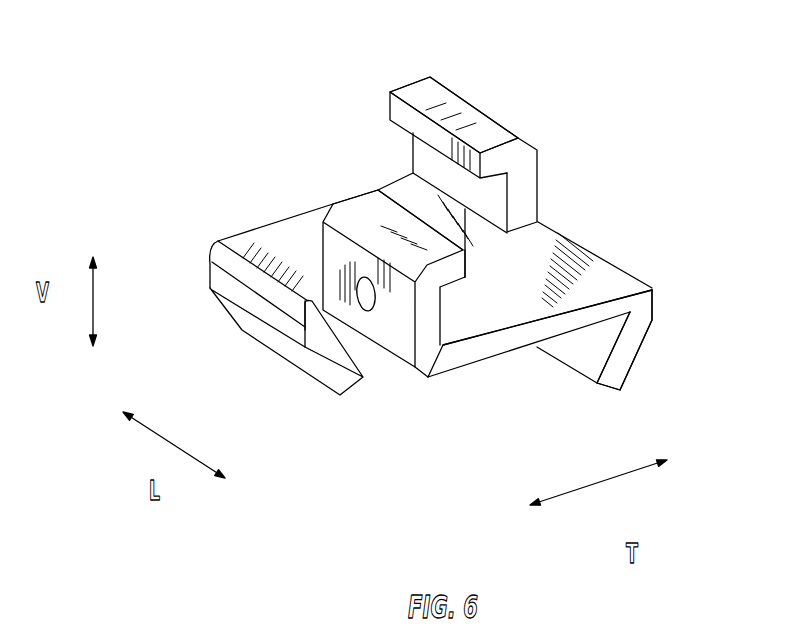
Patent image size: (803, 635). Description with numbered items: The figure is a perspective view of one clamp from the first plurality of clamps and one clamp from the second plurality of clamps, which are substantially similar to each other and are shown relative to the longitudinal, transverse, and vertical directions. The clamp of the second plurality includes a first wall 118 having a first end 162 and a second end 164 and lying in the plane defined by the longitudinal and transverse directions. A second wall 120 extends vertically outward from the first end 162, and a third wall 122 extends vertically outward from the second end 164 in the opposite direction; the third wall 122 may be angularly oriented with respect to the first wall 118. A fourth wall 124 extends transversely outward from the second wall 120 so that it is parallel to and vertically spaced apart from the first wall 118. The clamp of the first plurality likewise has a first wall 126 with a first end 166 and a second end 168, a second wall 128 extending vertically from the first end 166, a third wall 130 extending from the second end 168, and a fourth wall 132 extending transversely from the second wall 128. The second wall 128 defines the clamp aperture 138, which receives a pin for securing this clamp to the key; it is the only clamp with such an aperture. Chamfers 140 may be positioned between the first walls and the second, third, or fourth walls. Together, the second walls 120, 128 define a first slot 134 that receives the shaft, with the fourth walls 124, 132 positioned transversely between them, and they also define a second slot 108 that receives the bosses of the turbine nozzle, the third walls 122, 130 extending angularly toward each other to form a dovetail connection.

The second slot 108 is at (520, 395).
The first wall 118 is at (295, 233).
The second wall 120 is at (521, 200).
The third wall 122 is at (282, 348).
The fourth wall 124 is at (423, 92).
The first wall 126 is at (608, 270).
The second wall 128 is at (400, 350).
The third wall 130 is at (630, 350).
The fourth wall 132 is at (372, 203).
The first slot 134 is at (478, 233).
The clamp aperture 138 is at (354, 308).
The chamfer 140 is at (652, 288).
The first end 162 is at (399, 187).
The second end 164 is at (222, 250).
The first end 166 is at (455, 330).
The second end 168 is at (590, 252).